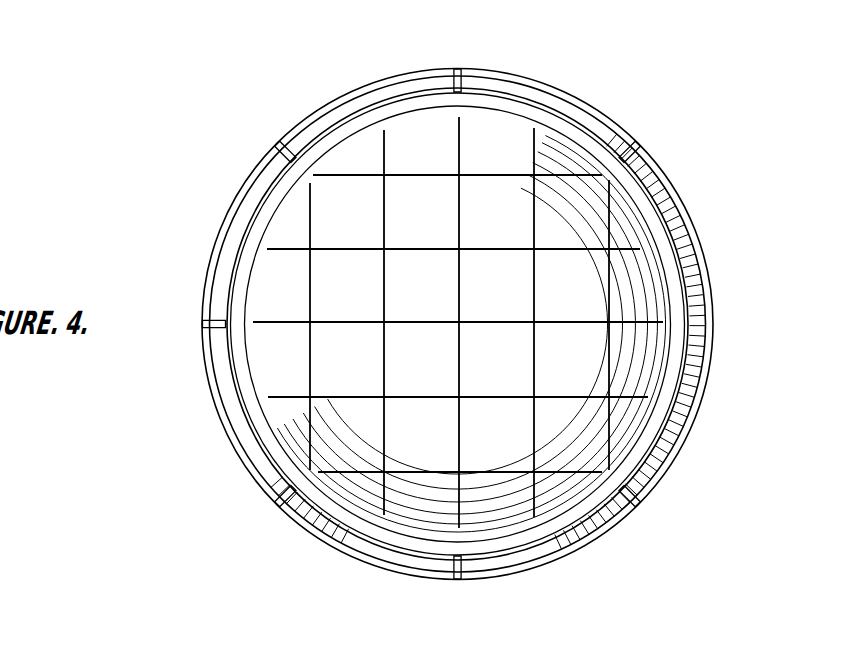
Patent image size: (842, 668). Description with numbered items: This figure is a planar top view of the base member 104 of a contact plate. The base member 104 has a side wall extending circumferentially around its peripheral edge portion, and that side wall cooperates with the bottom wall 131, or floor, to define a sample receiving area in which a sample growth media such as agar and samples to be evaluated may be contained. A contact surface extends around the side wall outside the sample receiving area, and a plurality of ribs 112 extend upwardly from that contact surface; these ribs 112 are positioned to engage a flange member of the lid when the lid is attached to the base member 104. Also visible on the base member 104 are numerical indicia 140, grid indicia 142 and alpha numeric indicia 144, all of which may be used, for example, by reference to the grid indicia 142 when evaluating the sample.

The petri dish lid 104 is at (712, 362).
The alignment tabs 112 is at (456, 76).
The concentric rings 131 is at (640, 376).
The column indicia 140 is at (350, 158).
The grid lines 142 is at (300, 398).
The row indicia 144 is at (267, 350).